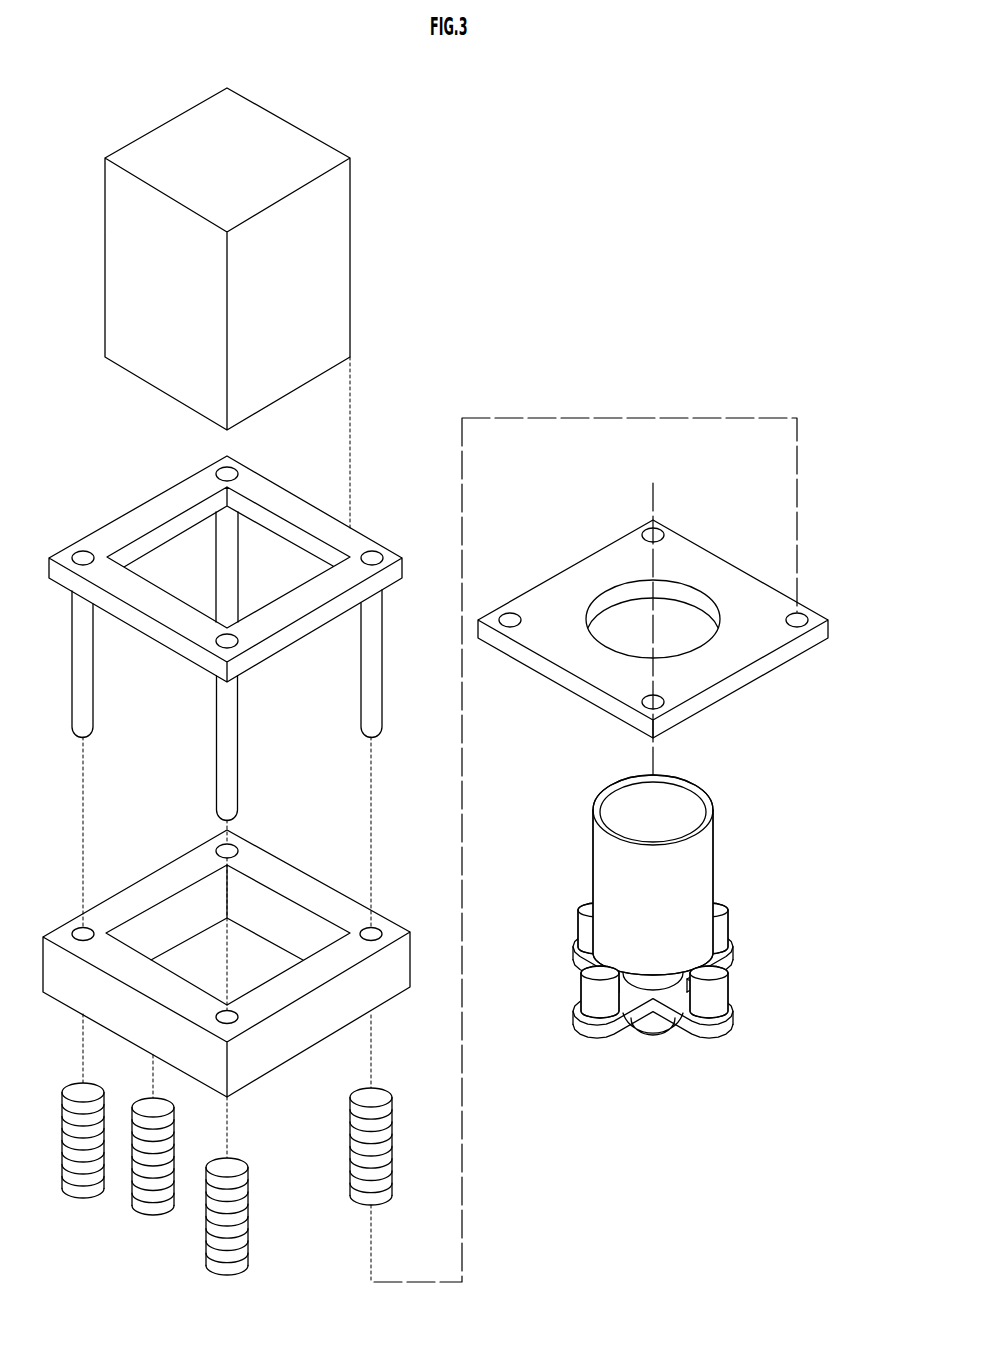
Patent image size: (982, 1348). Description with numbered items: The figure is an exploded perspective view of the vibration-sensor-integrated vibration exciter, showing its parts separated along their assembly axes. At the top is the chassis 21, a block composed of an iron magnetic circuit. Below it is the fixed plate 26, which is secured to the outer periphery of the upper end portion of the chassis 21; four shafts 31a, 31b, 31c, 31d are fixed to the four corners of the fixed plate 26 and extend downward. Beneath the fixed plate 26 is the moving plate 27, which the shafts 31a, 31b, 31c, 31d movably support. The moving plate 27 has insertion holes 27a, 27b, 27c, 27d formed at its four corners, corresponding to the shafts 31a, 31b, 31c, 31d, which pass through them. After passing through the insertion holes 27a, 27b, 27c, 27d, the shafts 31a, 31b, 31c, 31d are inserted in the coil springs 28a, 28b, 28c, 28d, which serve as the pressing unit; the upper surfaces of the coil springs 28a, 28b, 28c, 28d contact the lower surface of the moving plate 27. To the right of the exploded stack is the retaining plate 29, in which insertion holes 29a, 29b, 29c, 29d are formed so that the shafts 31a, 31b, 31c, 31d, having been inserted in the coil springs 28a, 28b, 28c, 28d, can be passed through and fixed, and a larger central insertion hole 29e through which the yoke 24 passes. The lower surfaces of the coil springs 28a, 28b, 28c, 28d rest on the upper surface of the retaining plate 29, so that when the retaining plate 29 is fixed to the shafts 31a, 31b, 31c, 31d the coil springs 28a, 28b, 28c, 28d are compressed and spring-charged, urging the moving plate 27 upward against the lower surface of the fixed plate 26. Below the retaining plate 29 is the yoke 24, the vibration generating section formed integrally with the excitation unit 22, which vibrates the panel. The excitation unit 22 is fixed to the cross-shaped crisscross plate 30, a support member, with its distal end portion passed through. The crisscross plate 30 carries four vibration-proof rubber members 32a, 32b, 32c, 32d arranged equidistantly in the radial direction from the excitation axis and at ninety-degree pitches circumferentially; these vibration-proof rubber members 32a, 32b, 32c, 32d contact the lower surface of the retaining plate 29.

The chassis 21 is at (288, 135).
The fixed plate 26 is at (307, 512).
The shaft 31a is at (96, 658).
The shaft 31b is at (240, 565).
The shaft 31c is at (385, 658).
The shaft 31d is at (240, 745).
The moving plate 27 is at (226, 939).
The insertion hole 27a is at (85, 928).
The insertion hole 27b is at (235, 845).
The insertion hole 27c is at (376, 928).
The insertion hole 27d is at (233, 1010).
The coil spring 28a is at (84, 1200).
The coil spring 28b is at (153, 1216).
The coil spring 28c is at (393, 1153).
The coil spring 28d is at (250, 1223).
The retaining plate 29 is at (653, 608).
The insertion hole 29a is at (512, 612).
The insertion hole 29b is at (656, 530).
The insertion hole 29c is at (797, 612).
The insertion hole 29d is at (665, 694).
The insertion hole 29e is at (613, 598).
The yoke 24 is at (700, 858).
The excitation unit 22 is at (660, 970).
The crisscross plate 30 is at (600, 1035).
The vibration-proof rubber member 32a is at (582, 1000).
The vibration-proof rubber member 32b is at (580, 932).
The vibration-proof rubber member 32c is at (728, 932).
The vibration-proof rubber member 32d is at (728, 1000).